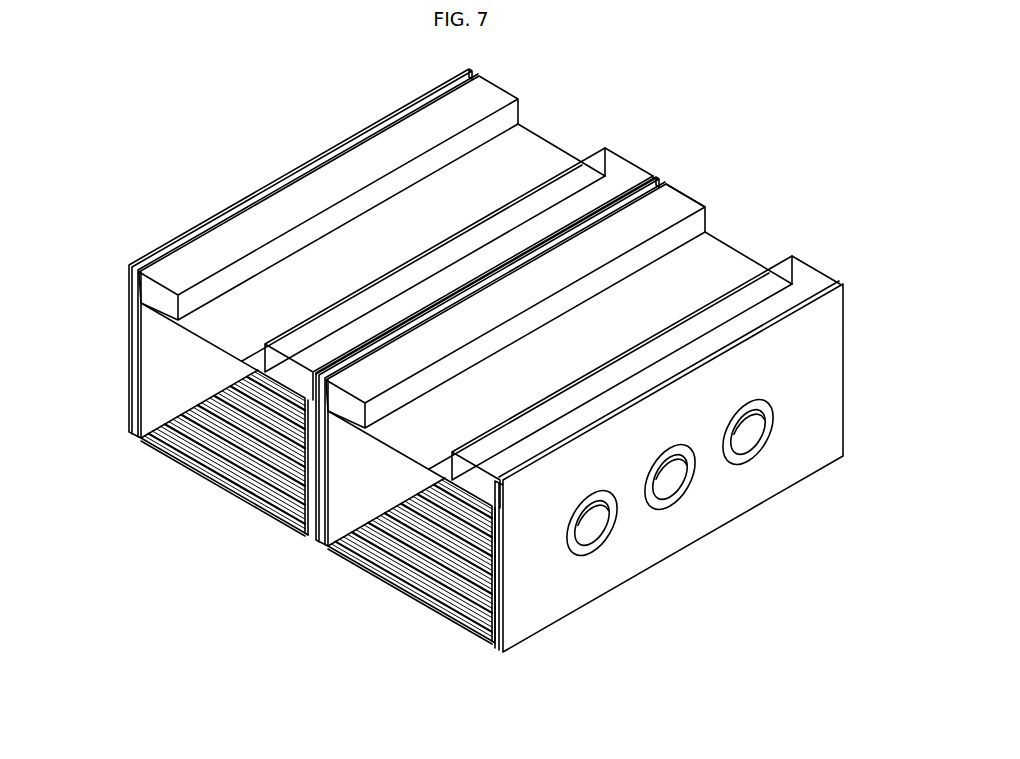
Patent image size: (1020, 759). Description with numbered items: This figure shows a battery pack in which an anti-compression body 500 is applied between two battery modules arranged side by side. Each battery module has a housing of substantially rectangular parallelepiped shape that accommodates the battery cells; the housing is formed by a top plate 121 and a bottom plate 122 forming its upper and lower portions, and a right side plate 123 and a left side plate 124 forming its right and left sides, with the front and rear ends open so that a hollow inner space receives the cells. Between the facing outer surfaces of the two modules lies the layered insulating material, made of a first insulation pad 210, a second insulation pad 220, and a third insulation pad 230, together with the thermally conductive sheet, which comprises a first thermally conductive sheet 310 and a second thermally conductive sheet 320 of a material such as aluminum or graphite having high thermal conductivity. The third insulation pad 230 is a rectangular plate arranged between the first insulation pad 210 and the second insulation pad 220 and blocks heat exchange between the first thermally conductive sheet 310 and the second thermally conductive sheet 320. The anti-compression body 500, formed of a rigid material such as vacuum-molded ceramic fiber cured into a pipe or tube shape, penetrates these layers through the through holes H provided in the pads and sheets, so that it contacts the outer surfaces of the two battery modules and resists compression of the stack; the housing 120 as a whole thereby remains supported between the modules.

The battery module housing 120 is at (527, 122).
The top plate 121 is at (538, 150).
The bottom plate 122 is at (229, 489).
The right side plate 123 is at (281, 495).
The left side plate 124 is at (152, 375).
The first insulation pad 210 is at (622, 163).
The second insulation pad 220 is at (699, 223).
The third insulation pad 230 is at (655, 180).
The first thermally conductive sheet 310 is at (600, 170).
The second thermally conductive sheet 320 is at (673, 205).
The anti-compression body 500 is at (669, 468).
The through holes H is at (678, 479).